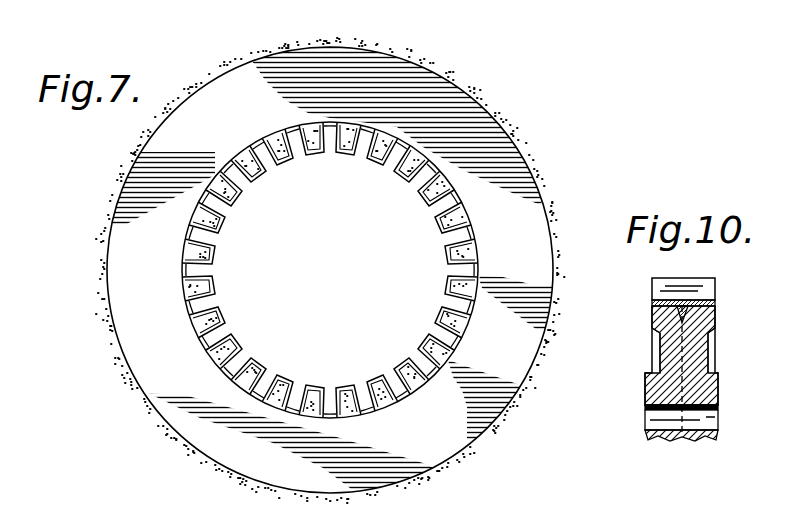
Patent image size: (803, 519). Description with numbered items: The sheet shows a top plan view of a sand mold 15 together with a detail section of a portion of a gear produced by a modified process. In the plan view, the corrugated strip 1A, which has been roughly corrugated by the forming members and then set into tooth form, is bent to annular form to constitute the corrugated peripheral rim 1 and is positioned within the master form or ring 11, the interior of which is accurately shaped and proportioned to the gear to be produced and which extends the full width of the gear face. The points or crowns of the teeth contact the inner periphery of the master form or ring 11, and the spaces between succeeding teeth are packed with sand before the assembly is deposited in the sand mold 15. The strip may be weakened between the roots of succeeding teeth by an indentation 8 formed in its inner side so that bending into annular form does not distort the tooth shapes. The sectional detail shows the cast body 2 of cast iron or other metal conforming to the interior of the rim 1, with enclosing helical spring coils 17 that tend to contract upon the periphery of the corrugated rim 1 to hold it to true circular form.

In FIG. 7, the strip 1A is at (322, 128).
In FIG. 7, the indentation 8 is at (336, 400).
In FIG. 7, the master form or ring 11 is at (505, 222).
In FIG. 7, the sand mold 15 is at (526, 150).
In FIG. 10, the corrugated peripheral rim 1 is at (695, 283).
In FIG. 10, the helical spring coils 17 is at (690, 315).
In FIG. 10, the body 2 is at (698, 362).